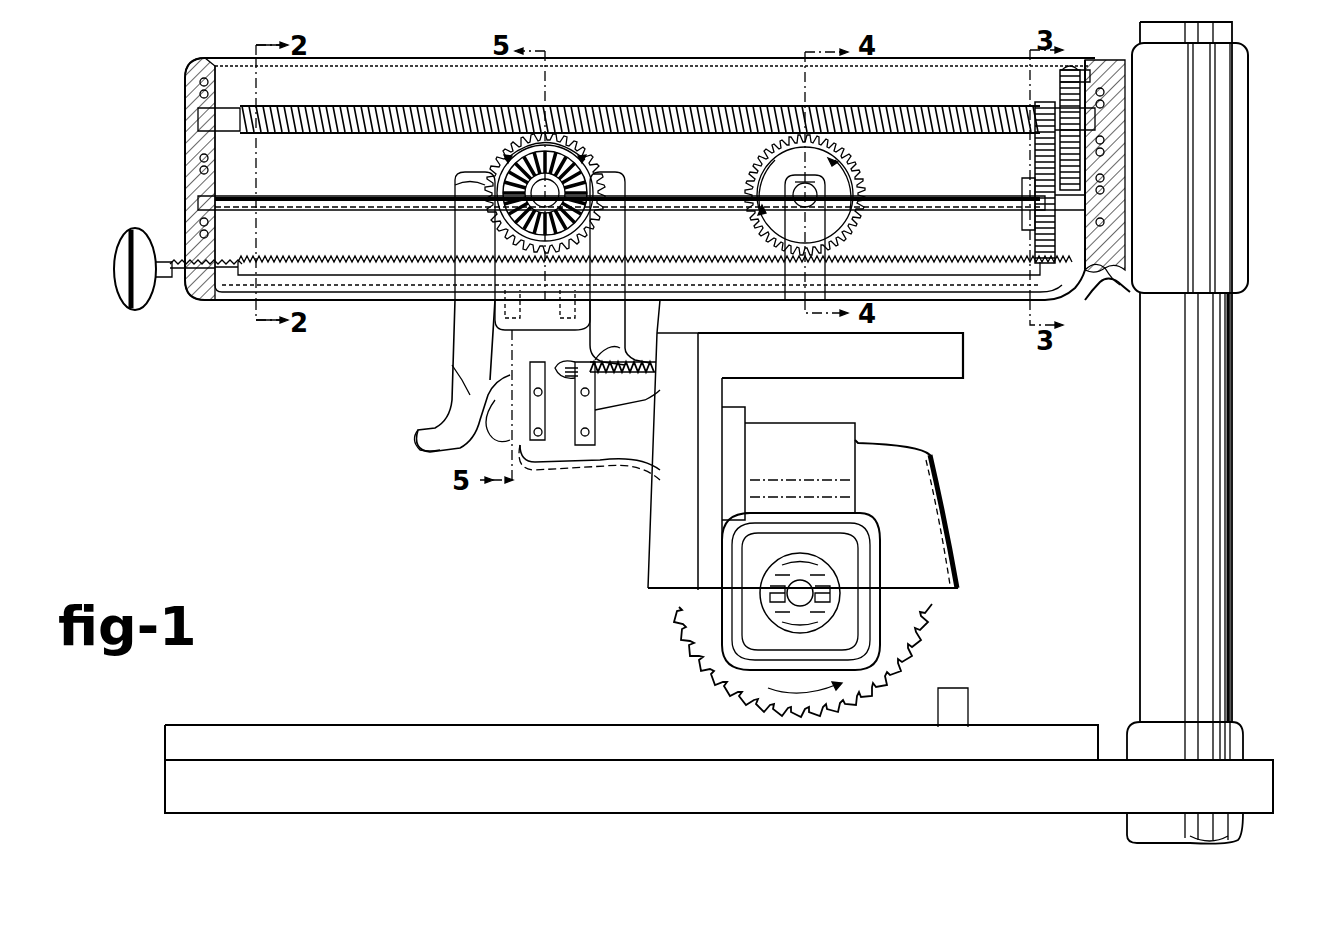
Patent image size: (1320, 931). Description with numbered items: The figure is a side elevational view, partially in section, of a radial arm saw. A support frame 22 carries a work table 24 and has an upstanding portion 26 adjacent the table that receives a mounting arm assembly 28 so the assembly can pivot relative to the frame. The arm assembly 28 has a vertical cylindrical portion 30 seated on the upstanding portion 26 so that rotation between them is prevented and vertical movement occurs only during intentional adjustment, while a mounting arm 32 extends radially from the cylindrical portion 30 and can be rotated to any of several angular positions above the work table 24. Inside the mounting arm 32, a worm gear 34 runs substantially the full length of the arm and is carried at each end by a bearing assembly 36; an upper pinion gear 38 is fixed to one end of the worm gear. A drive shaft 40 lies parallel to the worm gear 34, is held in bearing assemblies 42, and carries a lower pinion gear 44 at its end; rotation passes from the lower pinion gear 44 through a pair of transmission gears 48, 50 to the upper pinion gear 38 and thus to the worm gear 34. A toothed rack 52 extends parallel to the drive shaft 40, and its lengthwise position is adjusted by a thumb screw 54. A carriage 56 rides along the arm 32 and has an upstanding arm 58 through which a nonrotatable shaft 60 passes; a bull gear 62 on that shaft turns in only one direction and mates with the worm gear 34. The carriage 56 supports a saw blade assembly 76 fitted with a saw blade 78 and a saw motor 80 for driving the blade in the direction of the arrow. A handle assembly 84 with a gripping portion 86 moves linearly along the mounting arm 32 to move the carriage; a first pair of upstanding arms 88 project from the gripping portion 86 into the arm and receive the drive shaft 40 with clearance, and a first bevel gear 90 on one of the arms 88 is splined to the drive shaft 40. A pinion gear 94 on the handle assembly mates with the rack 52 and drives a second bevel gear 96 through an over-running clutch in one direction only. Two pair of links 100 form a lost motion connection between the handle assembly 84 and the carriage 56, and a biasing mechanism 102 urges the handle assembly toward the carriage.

The support frame 22 is at (1235, 832).
The work table 24 is at (410, 724).
The upstanding portion 26 is at (1212, 505).
The mounting arm assembly 28 is at (1096, 280).
The vertical cylindrical portion 30 is at (1226, 268).
The mounting arm 32 is at (905, 62).
The worm gear 34 is at (302, 118).
The bearing assembly 36 is at (190, 100).
The upper pinion gear 38 is at (1082, 68).
The drive shaft 40 is at (298, 198).
The bearing assemblies 42 is at (190, 182).
The lower pinion gear 44 is at (1035, 238).
The transmission gear 48 is at (1035, 100).
The transmission gear 50 is at (1060, 74).
The toothed rack 52 is at (298, 266).
The thumb screw 54 is at (142, 303).
The carriage 56 is at (972, 332).
The upstanding arm 58 is at (822, 204).
The nonrotatable shaft 60 is at (838, 192).
The bull gear 62 is at (848, 172).
The saw blade assembly 76 is at (930, 456).
The saw blade 78 is at (918, 606).
The saw motor 80 is at (852, 560).
The handle assembly 84 is at (450, 322).
The gripping portion 86 is at (432, 452).
The first pair of upstanding arms 88 is at (462, 238).
The first bevel gear 90 is at (460, 192).
The pinion gear 94 is at (575, 162).
The second bevel gear 96 is at (590, 160).
The links 100 is at (592, 415).
The biasing mechanism 102 is at (625, 360).